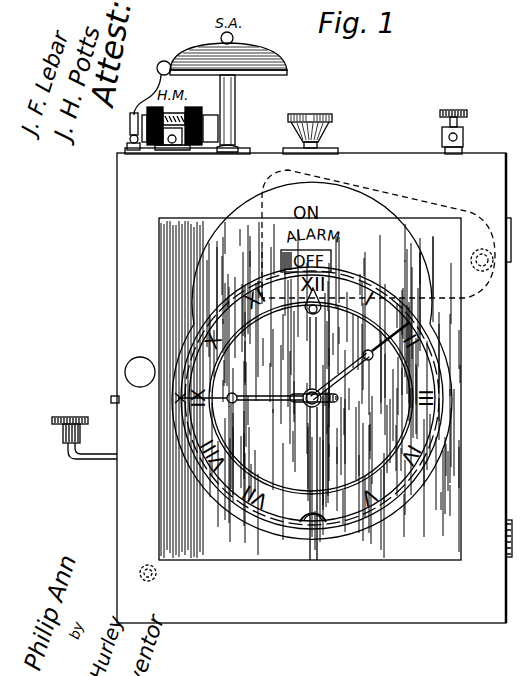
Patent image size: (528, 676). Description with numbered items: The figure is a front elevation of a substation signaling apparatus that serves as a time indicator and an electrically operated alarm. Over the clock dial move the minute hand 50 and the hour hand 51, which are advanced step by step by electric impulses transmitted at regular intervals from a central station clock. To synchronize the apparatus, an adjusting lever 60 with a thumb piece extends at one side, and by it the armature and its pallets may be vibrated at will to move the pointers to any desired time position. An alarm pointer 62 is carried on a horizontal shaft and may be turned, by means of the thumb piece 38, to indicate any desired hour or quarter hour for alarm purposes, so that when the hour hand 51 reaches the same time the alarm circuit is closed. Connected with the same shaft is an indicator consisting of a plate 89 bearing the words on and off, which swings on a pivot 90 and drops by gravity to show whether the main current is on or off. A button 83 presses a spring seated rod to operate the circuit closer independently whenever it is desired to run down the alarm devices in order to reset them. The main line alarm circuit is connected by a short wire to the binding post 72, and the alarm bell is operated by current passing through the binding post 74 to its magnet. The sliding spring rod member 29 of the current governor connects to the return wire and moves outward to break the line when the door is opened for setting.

The sliding spring rod member 29 is at (152, 580).
The thumb piece 38 is at (326, 404).
The minute hand 50 is at (272, 401).
The hour hand 51 is at (345, 375).
The adjusting lever 60 is at (110, 460).
The alarm pointer 62 is at (315, 372).
The binding post 72 is at (465, 129).
The binding post 74 is at (178, 143).
The button 83 is at (334, 119).
The plate 89 is at (350, 192).
The pivot 90 is at (484, 268).